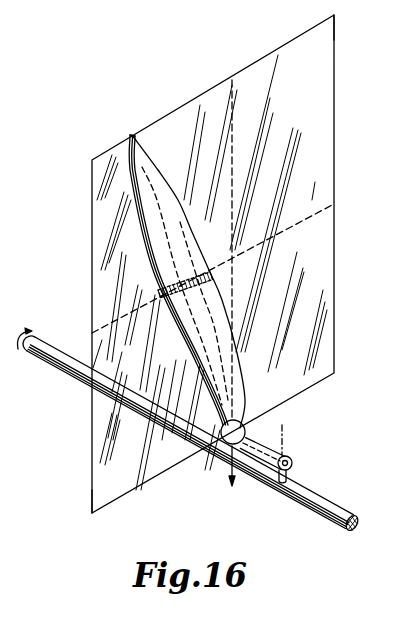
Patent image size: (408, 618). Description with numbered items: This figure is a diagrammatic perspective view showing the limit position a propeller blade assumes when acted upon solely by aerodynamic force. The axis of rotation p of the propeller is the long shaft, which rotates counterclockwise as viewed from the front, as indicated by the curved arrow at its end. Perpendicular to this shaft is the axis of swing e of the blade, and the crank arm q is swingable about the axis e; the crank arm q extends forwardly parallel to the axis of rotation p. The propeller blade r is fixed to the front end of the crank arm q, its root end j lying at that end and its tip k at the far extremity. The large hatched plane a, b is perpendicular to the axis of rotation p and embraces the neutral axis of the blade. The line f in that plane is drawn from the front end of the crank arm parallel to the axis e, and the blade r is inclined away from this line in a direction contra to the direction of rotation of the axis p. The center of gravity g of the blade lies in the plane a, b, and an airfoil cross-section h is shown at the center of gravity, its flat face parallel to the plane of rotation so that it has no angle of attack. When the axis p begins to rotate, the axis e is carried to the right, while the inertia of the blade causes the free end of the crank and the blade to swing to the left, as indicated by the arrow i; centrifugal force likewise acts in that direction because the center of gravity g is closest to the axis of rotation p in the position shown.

The plane a, b a is at (341, 24).
The plane a b is at (99, 512).
The axis of swing of the blade e is at (287, 468).
The line f is at (201, 246).
The center of gravity of the blade g is at (158, 291).
The airfoil cross-section h is at (195, 273).
The arrow i is at (233, 456).
The root end j is at (248, 418).
The tip k is at (132, 134).
The axis of rotation of the propeller p is at (259, 472).
The crank arm q is at (260, 443).
The propeller blade r is at (150, 233).